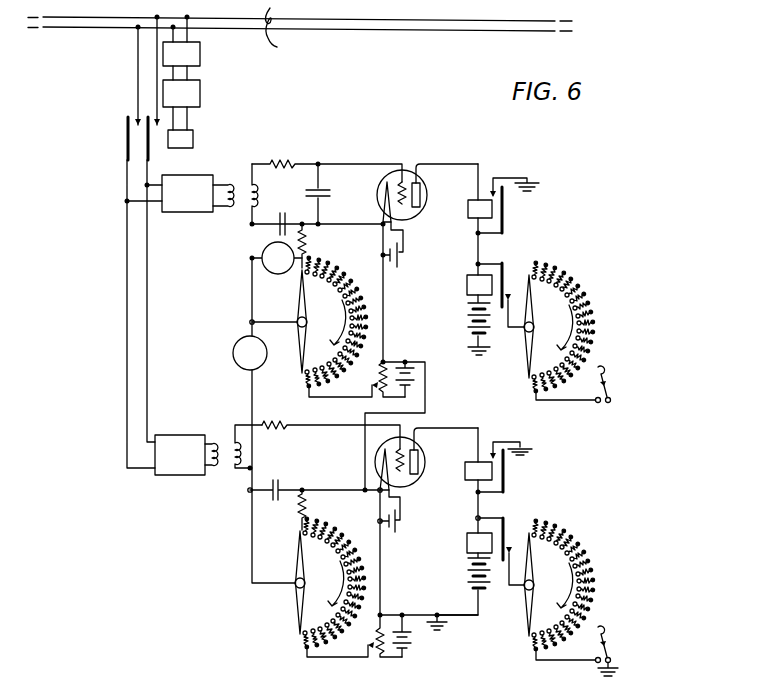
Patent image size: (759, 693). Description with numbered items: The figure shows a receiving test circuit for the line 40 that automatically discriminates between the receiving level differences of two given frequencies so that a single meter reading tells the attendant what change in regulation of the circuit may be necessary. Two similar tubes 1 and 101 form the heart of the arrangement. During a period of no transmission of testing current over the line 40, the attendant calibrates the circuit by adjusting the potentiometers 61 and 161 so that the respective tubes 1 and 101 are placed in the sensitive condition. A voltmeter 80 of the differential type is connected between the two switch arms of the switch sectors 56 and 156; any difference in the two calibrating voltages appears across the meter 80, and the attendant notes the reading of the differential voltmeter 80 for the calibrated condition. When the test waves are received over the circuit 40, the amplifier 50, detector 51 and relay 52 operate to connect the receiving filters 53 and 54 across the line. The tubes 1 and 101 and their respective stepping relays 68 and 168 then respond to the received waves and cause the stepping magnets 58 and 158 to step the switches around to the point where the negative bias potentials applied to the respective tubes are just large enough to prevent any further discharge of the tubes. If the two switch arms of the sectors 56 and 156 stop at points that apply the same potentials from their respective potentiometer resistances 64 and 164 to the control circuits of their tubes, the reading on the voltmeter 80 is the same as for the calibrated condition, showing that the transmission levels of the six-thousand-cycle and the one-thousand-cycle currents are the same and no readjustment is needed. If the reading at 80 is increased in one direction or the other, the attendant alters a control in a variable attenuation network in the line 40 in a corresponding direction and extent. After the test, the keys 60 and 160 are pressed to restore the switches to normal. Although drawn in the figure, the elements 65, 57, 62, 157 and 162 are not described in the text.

The line 40 is at (300, 33).
The amplifier 50 is at (200, 54).
The detector 51 is at (196, 100).
The relay 52 is at (193, 139).
The receiving filter 54 is at (190, 213).
The receiving filter 53 is at (192, 435).
The potentiometer resistance 64 is at (337, 268).
The voltmeter 65 is at (275, 274).
The differential voltmeter 80 is at (262, 366).
The switch sector 56 is at (321, 321).
The tube 1 is at (413, 168).
The stepping relay 68 is at (472, 222).
The stepping magnet 58 is at (467, 293).
The pointer 57 is at (559, 327).
The key 60 is at (606, 382).
The potentiometer 61 is at (375, 399).
The battery 62 is at (418, 386).
The tube 101 is at (420, 467).
The stepping relay 168 is at (465, 488).
The stepping magnet 158 is at (466, 547).
The pointer 157 is at (559, 585).
The key 160 is at (607, 637).
The potentiometer resistance 164 is at (335, 527).
The switch sector 156 is at (319, 582).
The potentiometer 161 is at (377, 659).
The battery 162 is at (418, 633).